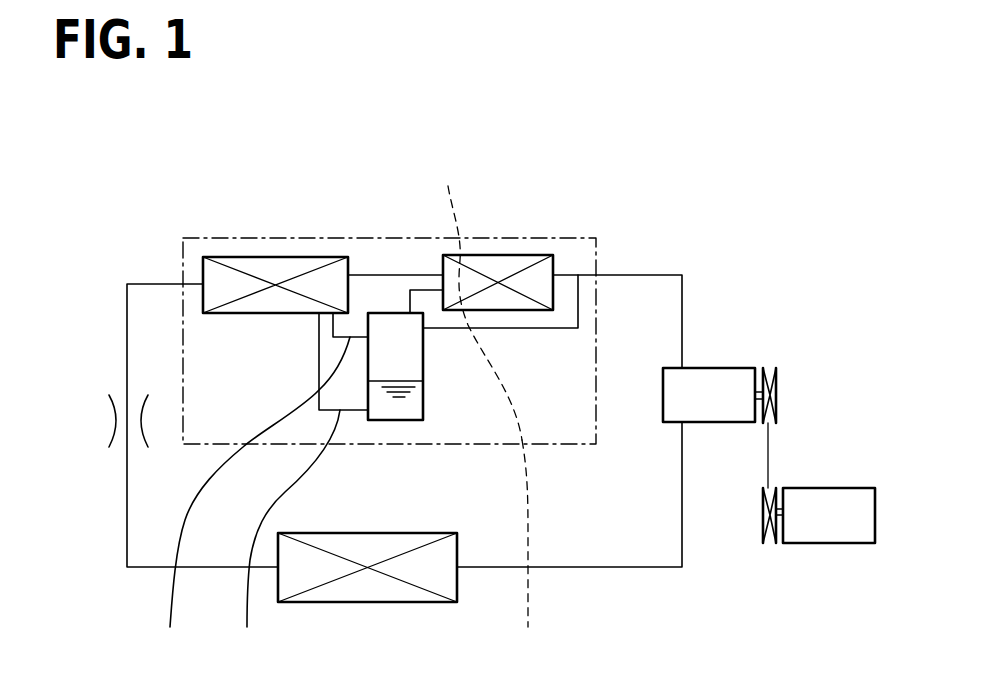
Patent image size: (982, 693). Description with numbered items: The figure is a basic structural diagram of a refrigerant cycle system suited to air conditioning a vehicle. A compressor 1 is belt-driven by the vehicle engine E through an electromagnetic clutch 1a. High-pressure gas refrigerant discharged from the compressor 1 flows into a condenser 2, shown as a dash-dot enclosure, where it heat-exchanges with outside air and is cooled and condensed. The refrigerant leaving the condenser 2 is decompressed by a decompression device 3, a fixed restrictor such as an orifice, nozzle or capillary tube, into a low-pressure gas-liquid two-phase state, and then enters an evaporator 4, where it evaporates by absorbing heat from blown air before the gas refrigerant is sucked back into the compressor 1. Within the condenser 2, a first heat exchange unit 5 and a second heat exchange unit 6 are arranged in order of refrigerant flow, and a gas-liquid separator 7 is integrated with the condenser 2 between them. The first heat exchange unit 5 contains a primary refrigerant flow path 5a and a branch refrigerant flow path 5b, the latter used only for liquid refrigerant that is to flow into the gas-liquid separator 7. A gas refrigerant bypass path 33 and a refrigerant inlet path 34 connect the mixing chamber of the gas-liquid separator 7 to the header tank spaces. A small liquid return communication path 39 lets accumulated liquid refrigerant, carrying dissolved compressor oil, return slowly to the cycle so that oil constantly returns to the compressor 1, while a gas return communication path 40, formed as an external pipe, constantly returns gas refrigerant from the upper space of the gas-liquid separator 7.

The compressor 1 is at (727, 368).
The electromagnetic clutch 1a is at (777, 393).
The condenser 2 is at (553, 232).
The decompression device 3 is at (113, 393).
The evaporator 4 is at (405, 595).
The first heat exchange unit 5 is at (498, 259).
The primary refrigerant flow path 5a is at (477, 299).
The branch refrigerant flow path 5b is at (531, 549).
The second heat exchange unit 6 is at (296, 263).
The gas-liquid separator 7 is at (425, 365).
The gas refrigerant bypass path 33 is at (555, 330).
The refrigerant inlet path 34 is at (418, 276).
The liquid return communication path 39 is at (285, 534).
The gas return communication path 40 is at (251, 498).
The vehicle engine E is at (840, 488).